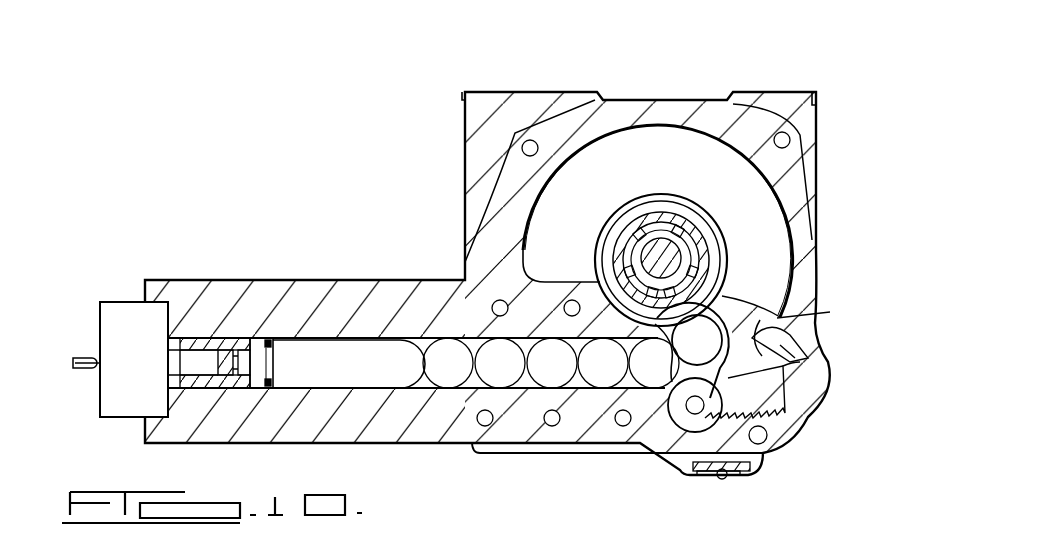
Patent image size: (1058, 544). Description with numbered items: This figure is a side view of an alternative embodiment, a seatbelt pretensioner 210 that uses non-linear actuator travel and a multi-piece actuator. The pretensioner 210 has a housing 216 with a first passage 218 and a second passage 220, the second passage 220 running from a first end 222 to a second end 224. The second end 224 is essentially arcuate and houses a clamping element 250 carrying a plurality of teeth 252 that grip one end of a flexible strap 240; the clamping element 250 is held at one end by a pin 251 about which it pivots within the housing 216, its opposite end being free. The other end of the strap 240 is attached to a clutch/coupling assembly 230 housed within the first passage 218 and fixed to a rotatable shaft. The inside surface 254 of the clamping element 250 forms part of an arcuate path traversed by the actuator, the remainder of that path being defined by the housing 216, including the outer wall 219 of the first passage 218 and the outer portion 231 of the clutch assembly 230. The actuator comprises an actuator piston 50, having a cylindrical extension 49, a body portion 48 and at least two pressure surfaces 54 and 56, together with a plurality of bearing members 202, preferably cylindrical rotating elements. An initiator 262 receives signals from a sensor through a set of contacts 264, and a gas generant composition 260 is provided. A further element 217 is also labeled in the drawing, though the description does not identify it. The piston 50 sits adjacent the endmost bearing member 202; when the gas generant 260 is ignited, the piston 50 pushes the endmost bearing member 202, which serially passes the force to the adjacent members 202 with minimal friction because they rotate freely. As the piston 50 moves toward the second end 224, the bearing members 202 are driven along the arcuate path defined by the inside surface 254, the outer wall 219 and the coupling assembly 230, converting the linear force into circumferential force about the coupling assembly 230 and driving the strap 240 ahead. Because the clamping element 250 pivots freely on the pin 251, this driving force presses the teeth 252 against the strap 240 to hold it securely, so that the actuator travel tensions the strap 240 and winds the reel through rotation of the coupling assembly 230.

The seatbelt pretensioner 210 is at (307, 155).
The housing 216 is at (443, 442).
The bearing / sleeve 217 is at (637, 242).
The first passage 218 is at (753, 227).
The outer wall 219 is at (761, 198).
The second passage 220 is at (576, 388).
The first end 222 is at (252, 398).
The second end 224 is at (793, 348).
The clutch/coupling assembly 230 is at (663, 188).
The outer portion 231 is at (692, 205).
The flexible strap 240 is at (735, 305).
The clamping element 250 is at (763, 370).
The pin 251 is at (695, 414).
The teeth 252 is at (795, 390).
The inside surface 254 is at (790, 320).
The gas generant composition 260 is at (198, 368).
The initiator 262 is at (103, 420).
The contacts 264 is at (80, 360).
The body portion 48 is at (392, 383).
The cylindrical extension 49 is at (242, 363).
The actuator piston 50 is at (393, 390).
The pressure surface 54 is at (215, 370).
The pressure surface 56 is at (240, 342).
The bearing members 202 is at (508, 377).